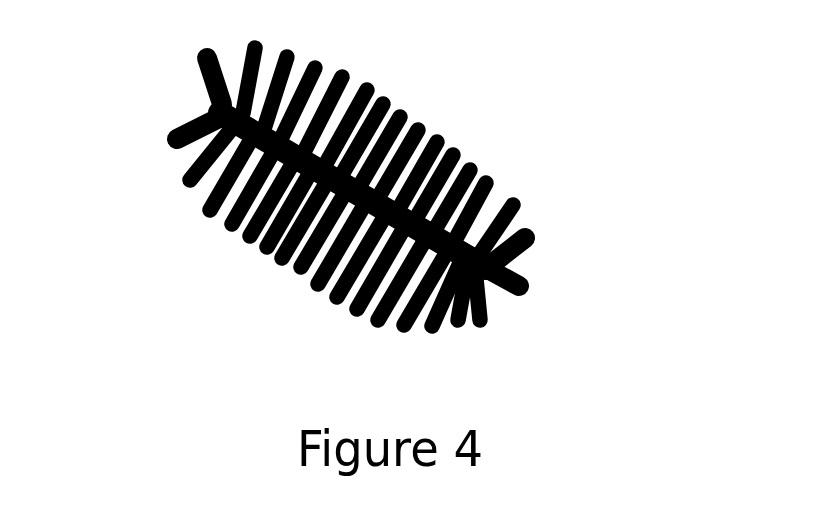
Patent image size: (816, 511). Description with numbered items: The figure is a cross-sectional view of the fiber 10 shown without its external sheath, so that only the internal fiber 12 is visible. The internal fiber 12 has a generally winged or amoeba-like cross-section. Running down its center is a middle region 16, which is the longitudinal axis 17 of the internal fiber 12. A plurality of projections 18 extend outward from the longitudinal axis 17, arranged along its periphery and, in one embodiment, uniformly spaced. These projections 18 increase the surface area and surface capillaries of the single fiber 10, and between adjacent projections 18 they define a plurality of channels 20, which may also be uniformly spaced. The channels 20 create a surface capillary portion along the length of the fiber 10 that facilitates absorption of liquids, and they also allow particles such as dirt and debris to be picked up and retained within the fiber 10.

The fiber 10 is at (493, 133).
The internal fiber 12 is at (528, 285).
The middle region 16 is at (467, 246).
The longitudinal axis 17 is at (190, 162).
The projections 18 is at (308, 67).
The channels 20 is at (300, 263).